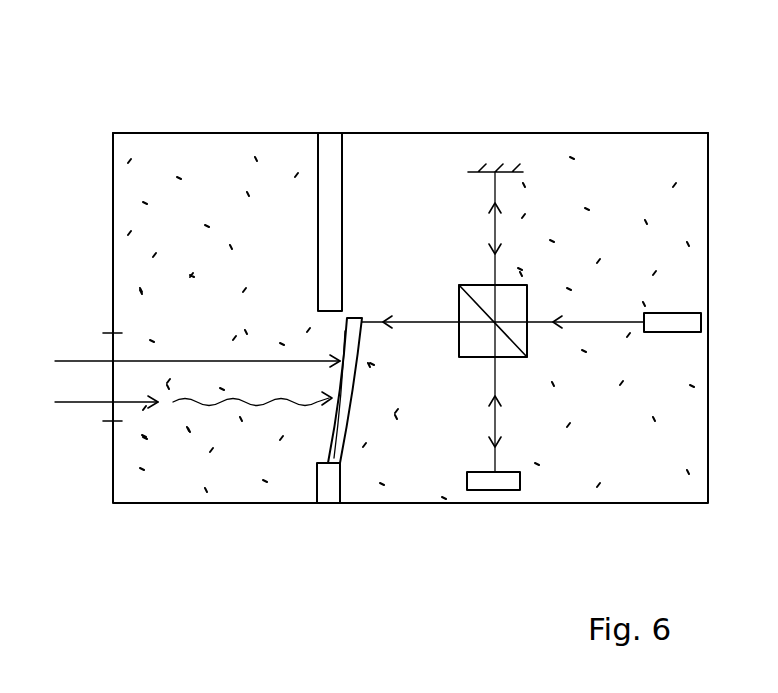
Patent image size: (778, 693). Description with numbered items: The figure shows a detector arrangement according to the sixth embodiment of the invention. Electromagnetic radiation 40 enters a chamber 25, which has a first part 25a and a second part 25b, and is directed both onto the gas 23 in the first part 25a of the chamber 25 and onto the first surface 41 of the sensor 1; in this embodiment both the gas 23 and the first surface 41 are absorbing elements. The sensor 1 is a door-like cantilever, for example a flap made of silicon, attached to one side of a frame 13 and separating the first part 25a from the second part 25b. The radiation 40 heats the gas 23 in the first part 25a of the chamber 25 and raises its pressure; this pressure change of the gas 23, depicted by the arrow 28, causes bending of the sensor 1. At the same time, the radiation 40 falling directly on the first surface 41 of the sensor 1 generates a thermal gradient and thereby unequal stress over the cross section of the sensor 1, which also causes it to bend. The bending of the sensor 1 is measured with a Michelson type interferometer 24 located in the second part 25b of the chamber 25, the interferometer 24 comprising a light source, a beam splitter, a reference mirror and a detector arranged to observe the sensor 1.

The sensor 1 is at (323, 435).
The frame 13 is at (328, 480).
The gas 23 is at (200, 455).
The Michelson type interferometer 24 is at (634, 451).
The chamber 25 is at (378, 133).
The first part of the chamber 25a is at (207, 183).
The second part of the chamber 25b is at (627, 185).
The arrow depicting pressure change 28 is at (228, 385).
The electromagnetic radiation 40 is at (82, 360).
The first surface of the sensor 41 is at (337, 338).